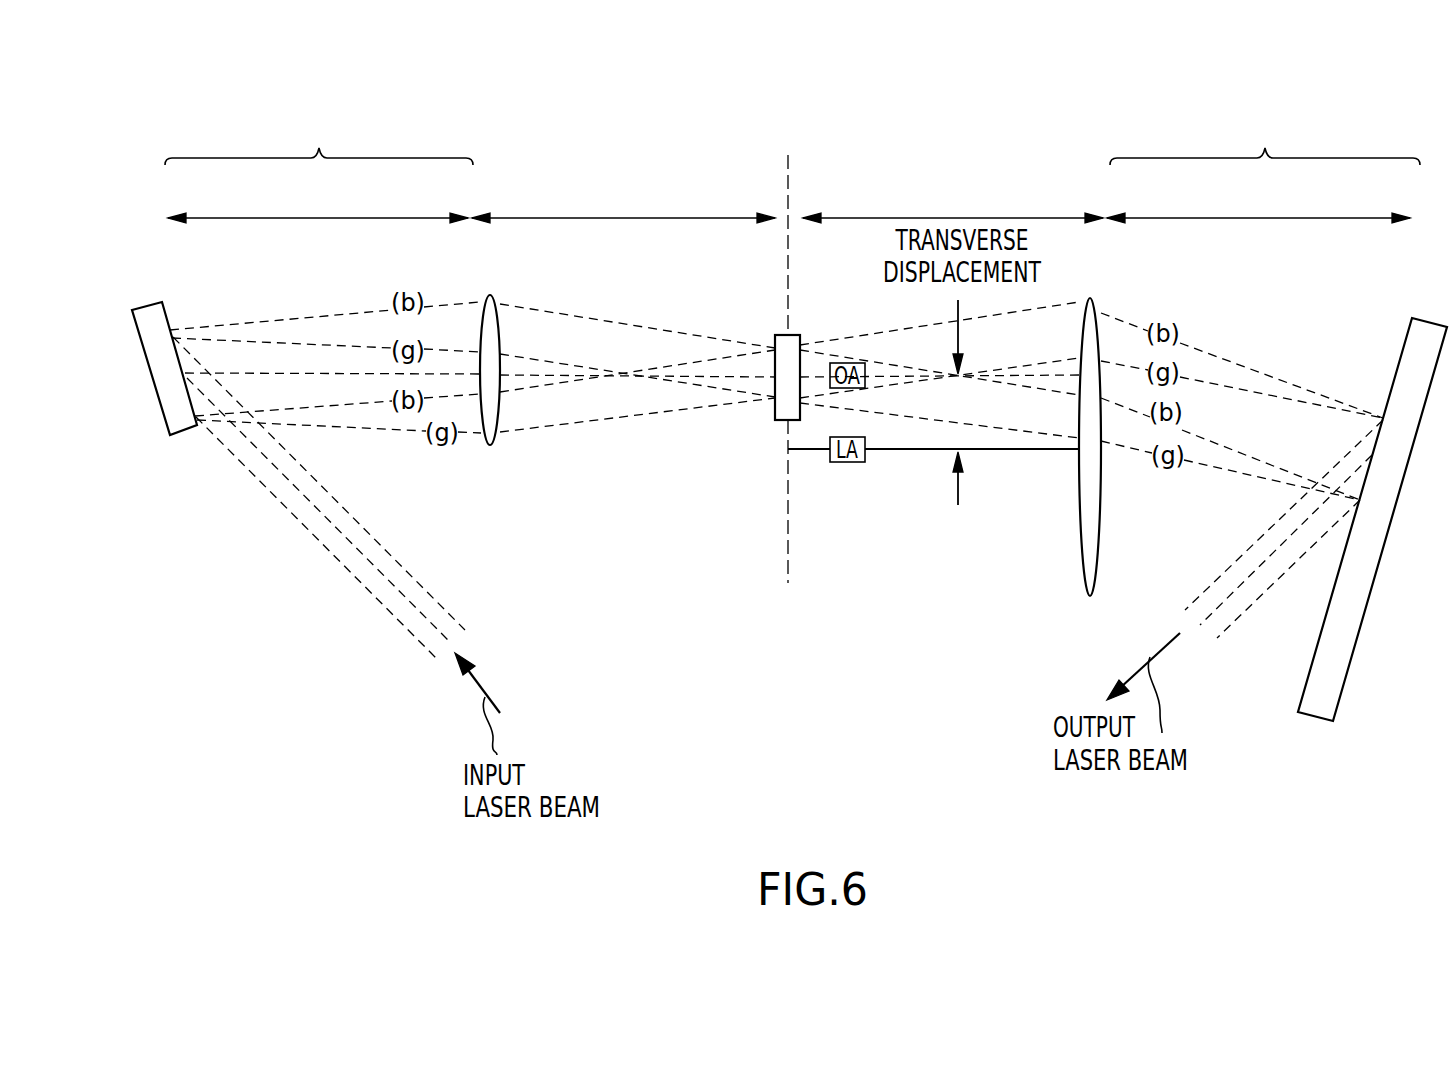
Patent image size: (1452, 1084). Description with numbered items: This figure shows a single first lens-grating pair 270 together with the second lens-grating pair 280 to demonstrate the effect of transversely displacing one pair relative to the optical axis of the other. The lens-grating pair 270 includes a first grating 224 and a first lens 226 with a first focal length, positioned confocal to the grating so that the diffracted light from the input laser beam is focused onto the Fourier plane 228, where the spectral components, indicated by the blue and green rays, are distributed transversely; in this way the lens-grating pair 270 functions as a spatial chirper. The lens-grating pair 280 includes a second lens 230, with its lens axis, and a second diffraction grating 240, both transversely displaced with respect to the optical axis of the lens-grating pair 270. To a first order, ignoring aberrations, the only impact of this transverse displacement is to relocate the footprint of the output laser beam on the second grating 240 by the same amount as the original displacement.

The grating (G1) 224 is at (163, 302).
The lens (f1) 226 is at (492, 297).
The Fourier plane 228 is at (788, 468).
The lens (f2) 230 is at (1092, 298).
The diffraction grating (G2) 240 is at (1407, 338).
The lens-grating pair 270 is at (470, 161).
The lens-grating pair 280 is at (1111, 161).